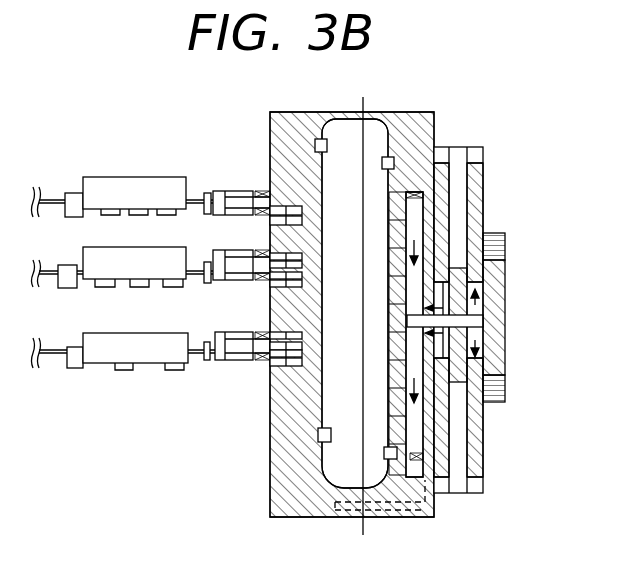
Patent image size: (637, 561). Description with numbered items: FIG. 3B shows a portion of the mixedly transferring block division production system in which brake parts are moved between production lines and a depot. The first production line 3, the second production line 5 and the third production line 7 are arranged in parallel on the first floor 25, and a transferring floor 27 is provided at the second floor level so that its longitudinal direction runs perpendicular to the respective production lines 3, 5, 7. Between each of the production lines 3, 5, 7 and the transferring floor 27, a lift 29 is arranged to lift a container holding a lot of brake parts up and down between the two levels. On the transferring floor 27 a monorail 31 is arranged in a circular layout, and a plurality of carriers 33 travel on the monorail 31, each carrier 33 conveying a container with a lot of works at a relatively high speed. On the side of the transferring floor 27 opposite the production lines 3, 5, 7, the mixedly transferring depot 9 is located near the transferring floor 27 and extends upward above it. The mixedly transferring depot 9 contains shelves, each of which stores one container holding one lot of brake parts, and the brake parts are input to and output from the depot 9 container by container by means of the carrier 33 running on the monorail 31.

The first production line 3 is at (103, 247).
The second production line 5 is at (103, 369).
The third production line 7 is at (110, 177).
The mixedly transferring depot 9 is at (483, 185).
The first floor 25 is at (165, 412).
The transferring floor 27 is at (413, 118).
The lift 29 is at (253, 362).
The monorail 31 is at (371, 117).
The carrier 33 is at (315, 144).